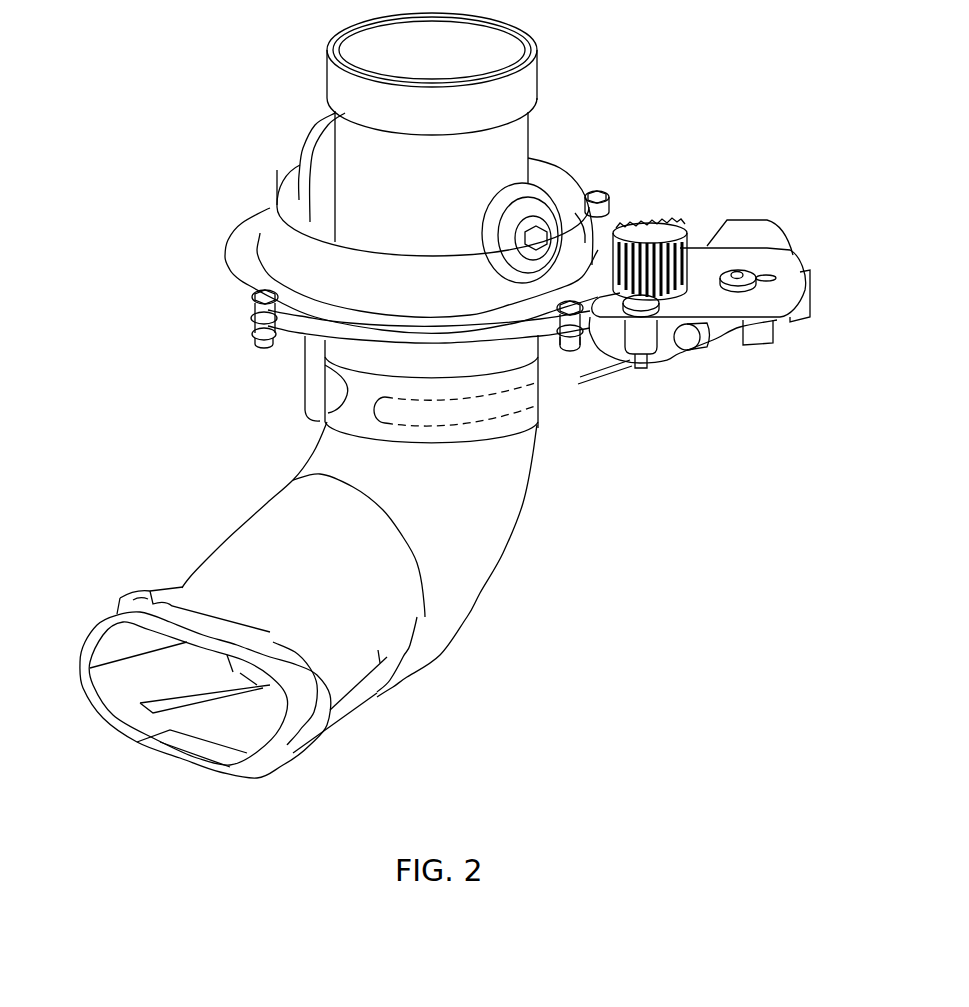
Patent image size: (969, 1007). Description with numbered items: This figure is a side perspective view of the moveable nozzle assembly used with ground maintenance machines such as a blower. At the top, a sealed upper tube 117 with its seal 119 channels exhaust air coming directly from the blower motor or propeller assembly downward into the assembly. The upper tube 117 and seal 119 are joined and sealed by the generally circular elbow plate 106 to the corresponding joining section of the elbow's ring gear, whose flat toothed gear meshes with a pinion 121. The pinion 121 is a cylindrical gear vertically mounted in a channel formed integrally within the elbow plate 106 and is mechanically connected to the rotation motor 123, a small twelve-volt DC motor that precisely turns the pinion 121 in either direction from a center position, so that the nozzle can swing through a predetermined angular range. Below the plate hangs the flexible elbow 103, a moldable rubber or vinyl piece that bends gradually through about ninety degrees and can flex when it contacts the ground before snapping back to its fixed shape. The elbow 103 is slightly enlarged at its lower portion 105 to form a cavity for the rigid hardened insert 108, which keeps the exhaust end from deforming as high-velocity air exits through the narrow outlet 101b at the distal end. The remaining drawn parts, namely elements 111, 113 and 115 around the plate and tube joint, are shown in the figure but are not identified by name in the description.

The outlet 101b is at (452, 703).
The flexible elbow 103 is at (493, 552).
The lower portion 105 is at (227, 540).
The elbow plate 106 is at (780, 270).
The hardened insert 108 is at (105, 690).
The mounting flange 111 is at (245, 230).
The housing 113 is at (570, 185).
The fastener 115 is at (603, 192).
The upper tube 117 is at (517, 133).
The seal 119 is at (528, 78).
The pinion 121 is at (655, 226).
The rotation motor 123 is at (752, 228).